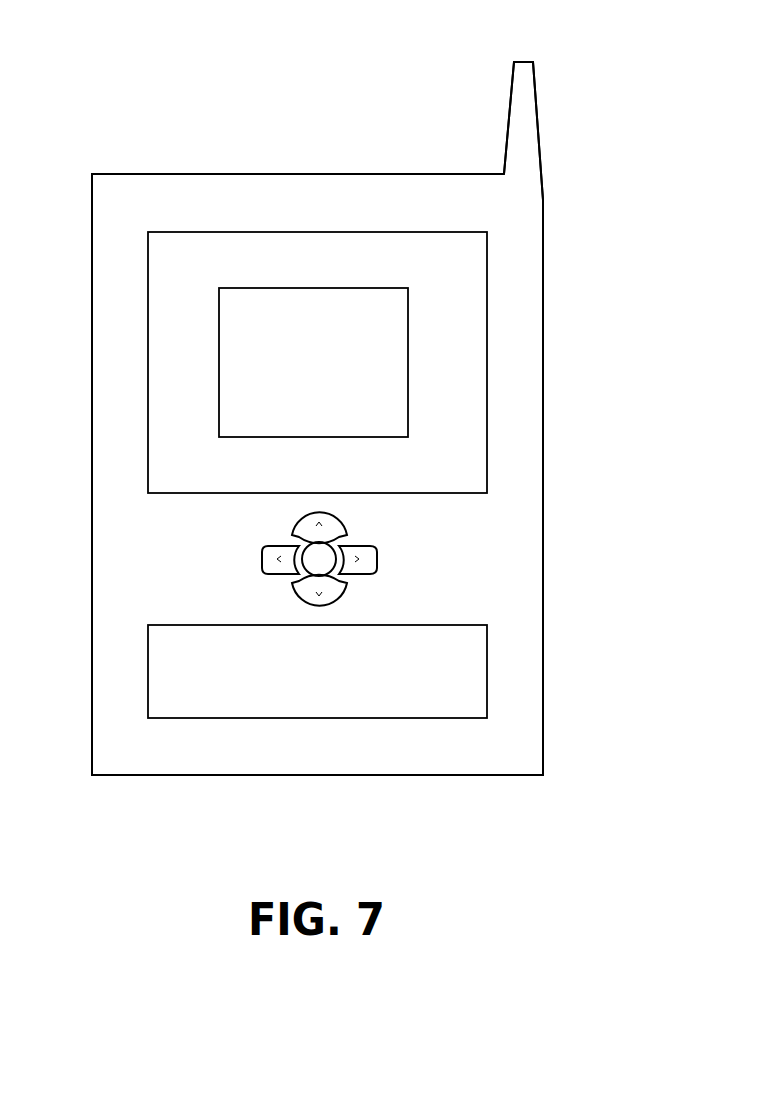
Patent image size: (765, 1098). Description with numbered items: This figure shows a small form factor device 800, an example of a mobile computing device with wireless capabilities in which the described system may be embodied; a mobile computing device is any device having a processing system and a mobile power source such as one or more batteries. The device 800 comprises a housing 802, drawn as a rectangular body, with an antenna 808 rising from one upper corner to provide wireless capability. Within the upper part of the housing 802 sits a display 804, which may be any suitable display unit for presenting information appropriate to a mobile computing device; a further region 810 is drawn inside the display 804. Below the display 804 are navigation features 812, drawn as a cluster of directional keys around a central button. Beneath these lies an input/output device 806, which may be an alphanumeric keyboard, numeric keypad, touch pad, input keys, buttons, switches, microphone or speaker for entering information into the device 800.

The small form factor device 800 is at (166, 76).
The housing 802 is at (543, 428).
The display 804 is at (487, 250).
The input/output (I/O) device 806 is at (487, 661).
The antenna 808 is at (511, 88).
The display window 810 is at (408, 343).
The navigation features 812 is at (392, 587).